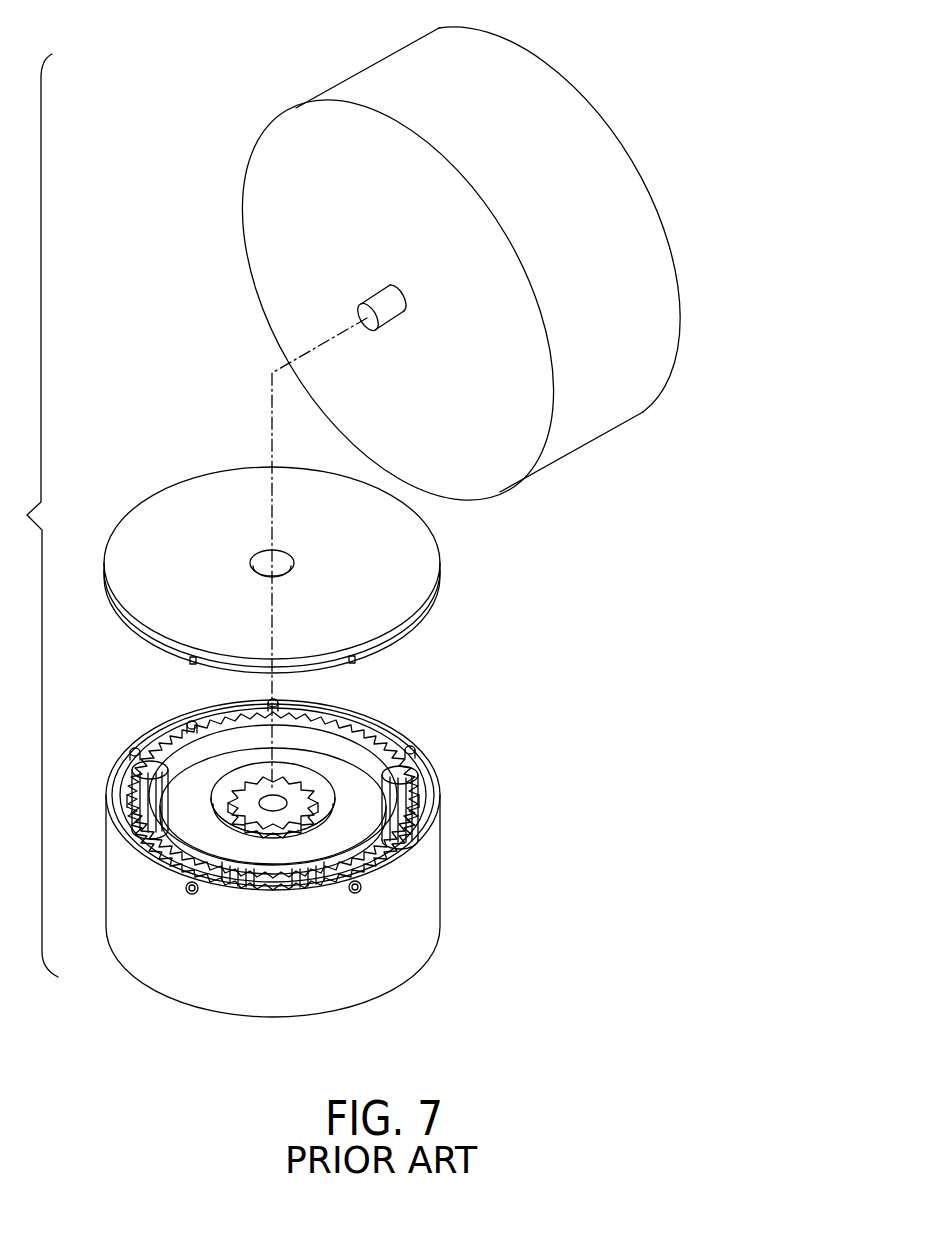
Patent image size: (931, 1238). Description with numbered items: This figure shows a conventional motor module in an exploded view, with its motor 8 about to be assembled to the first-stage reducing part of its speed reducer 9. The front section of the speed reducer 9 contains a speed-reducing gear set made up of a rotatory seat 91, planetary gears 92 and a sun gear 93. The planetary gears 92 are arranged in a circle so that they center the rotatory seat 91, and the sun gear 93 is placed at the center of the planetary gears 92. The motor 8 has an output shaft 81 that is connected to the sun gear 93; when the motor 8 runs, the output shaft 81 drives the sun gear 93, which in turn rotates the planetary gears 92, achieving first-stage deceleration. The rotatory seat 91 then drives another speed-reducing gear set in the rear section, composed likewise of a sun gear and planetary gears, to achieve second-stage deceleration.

The motor 8 is at (360, 78).
The output shaft 81 is at (380, 302).
The speed reducer 9 is at (425, 892).
The rotatory seat 91 is at (340, 750).
The planetary gears 92 is at (390, 842).
The sun gear 93 is at (325, 790).